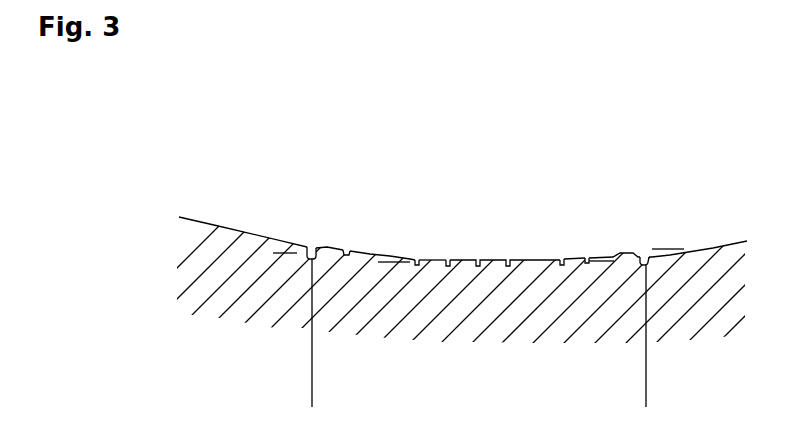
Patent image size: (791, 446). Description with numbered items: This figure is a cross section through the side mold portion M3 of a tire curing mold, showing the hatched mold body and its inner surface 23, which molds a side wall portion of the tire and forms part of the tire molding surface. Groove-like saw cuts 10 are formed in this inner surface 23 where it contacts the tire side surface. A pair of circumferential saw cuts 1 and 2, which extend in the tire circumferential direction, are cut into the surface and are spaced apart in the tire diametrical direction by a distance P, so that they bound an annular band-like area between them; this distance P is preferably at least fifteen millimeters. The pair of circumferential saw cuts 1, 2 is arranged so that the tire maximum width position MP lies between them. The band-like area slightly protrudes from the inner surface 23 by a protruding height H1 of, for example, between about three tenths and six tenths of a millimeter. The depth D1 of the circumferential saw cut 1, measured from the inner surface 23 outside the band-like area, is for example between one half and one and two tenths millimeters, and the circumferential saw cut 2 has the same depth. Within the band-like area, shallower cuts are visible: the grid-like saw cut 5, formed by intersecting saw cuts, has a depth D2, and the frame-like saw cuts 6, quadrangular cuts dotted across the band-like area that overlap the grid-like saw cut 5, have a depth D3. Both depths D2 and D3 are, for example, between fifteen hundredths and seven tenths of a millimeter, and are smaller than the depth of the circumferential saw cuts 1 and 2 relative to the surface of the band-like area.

The saw cut 10 is at (525, 160).
The circumferential saw cut 1 is at (314, 257).
The circumferential saw cut 2 is at (645, 258).
The grid-like saw cut 5 is at (448, 260).
The frame-like saw cut 6 is at (417, 258).
The inner surface 23 is at (728, 243).
The tire maximum width position MP is at (491, 258).
The side mold portion M3 is at (240, 308).
The distance P is at (646, 397).
The depth D1 is at (294, 278).
The depth D2 is at (597, 282).
The depth D3 is at (389, 278).
The protruding height H1 is at (668, 278).